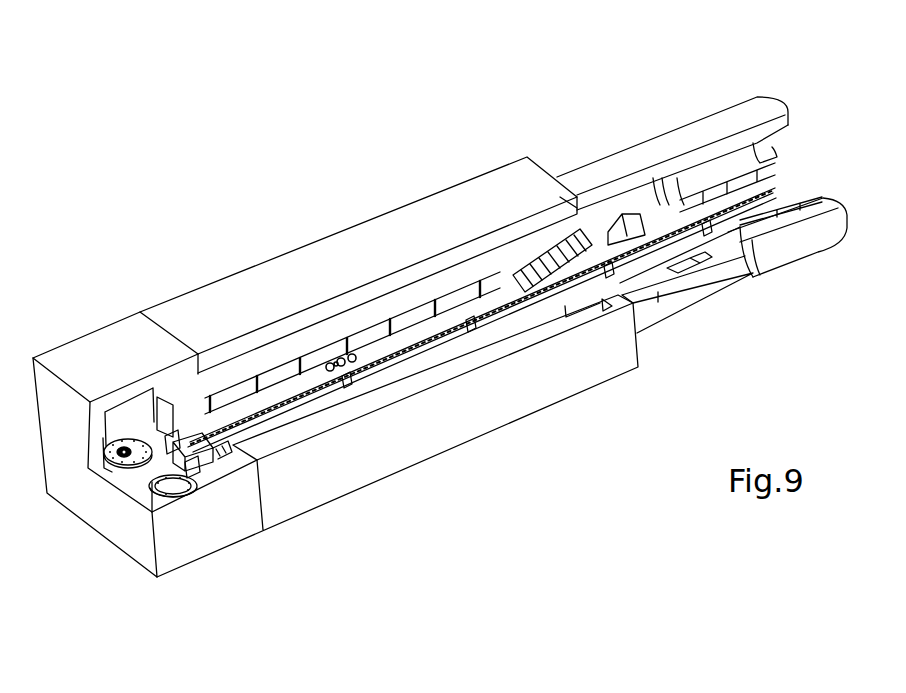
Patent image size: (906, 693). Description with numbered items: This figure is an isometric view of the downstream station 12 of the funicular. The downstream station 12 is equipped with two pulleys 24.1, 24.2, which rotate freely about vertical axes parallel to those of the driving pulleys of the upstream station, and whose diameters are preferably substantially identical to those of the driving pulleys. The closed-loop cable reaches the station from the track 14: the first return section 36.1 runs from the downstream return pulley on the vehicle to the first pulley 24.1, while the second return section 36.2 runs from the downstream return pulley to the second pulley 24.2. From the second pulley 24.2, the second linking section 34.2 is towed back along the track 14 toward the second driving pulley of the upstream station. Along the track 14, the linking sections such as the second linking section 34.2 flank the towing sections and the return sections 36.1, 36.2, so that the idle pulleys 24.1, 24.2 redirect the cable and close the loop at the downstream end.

The downstream station 12 is at (515, 463).
The track 14 is at (688, 98).
The first pulley of the downstream station 24.1 is at (165, 497).
The second pulley of the downstream station 24.2 is at (112, 465).
The second linking section 34.2 is at (148, 436).
The first return section 36.1 is at (188, 467).
The second return section 36.2 is at (173, 436).